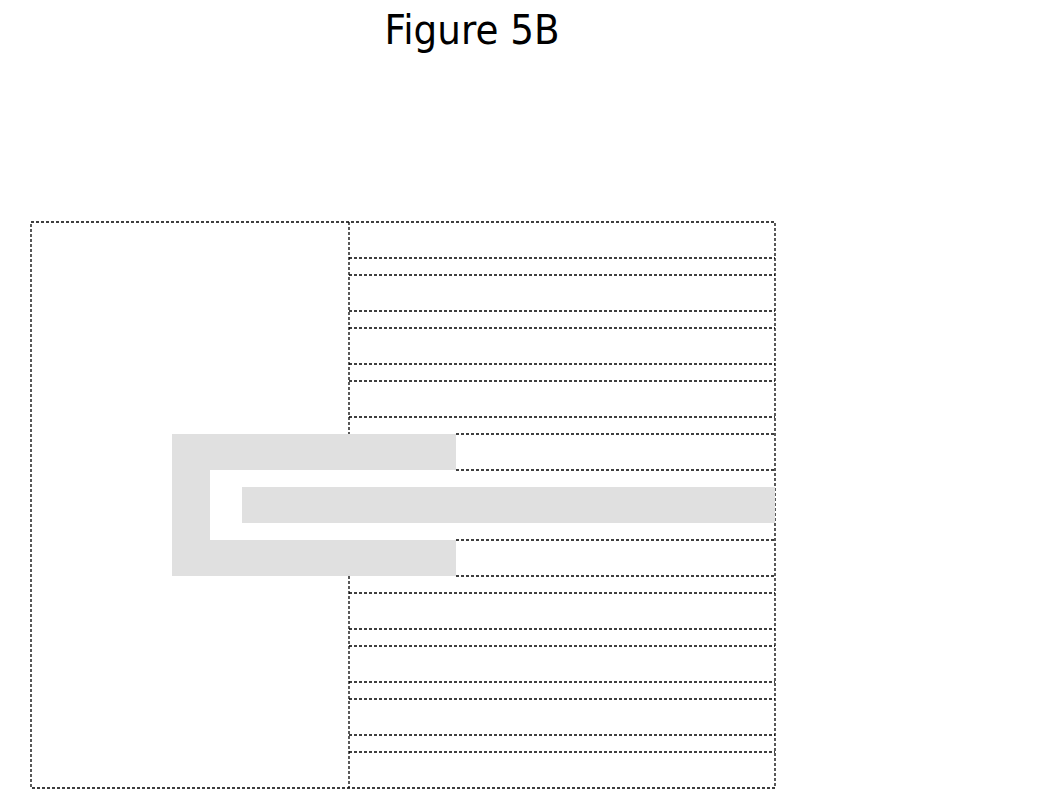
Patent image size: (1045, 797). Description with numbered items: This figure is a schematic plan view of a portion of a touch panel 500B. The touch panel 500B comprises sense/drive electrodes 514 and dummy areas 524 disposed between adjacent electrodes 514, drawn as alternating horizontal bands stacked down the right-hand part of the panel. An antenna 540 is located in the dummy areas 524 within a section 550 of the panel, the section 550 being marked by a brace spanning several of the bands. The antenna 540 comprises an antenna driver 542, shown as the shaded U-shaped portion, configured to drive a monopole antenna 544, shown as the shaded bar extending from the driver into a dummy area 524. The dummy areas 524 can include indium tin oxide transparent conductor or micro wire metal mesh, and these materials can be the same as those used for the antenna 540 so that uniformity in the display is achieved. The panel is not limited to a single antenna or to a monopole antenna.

The touch panel 500B is at (757, 143).
The sense/drive electrodes 514 is at (775, 266).
The dummy areas 524 is at (775, 240).
The antenna 540 is at (411, 471).
The antenna driver 542 is at (190, 434).
The monopole antenna 544 is at (243, 487).
The section 550 is at (893, 434).